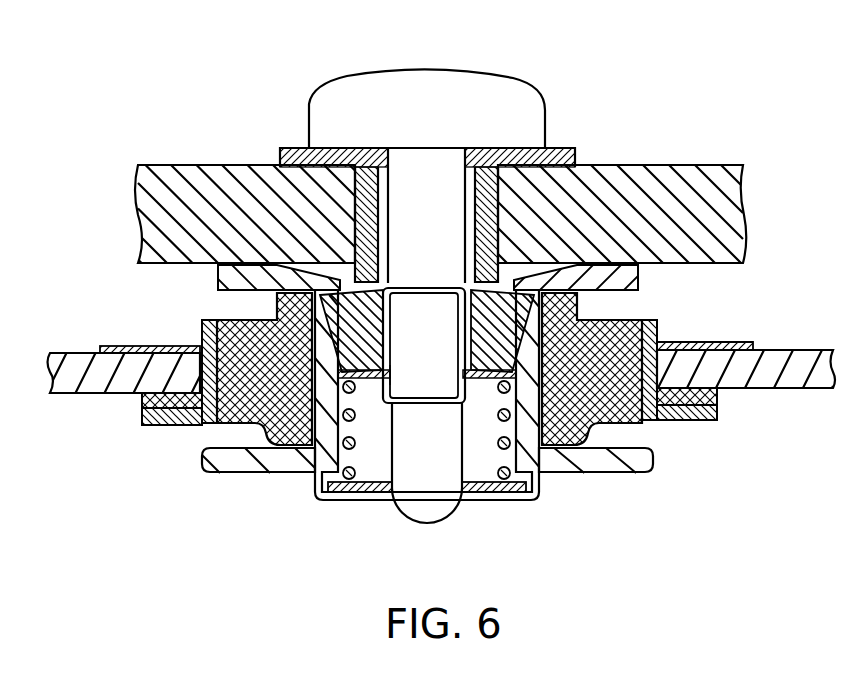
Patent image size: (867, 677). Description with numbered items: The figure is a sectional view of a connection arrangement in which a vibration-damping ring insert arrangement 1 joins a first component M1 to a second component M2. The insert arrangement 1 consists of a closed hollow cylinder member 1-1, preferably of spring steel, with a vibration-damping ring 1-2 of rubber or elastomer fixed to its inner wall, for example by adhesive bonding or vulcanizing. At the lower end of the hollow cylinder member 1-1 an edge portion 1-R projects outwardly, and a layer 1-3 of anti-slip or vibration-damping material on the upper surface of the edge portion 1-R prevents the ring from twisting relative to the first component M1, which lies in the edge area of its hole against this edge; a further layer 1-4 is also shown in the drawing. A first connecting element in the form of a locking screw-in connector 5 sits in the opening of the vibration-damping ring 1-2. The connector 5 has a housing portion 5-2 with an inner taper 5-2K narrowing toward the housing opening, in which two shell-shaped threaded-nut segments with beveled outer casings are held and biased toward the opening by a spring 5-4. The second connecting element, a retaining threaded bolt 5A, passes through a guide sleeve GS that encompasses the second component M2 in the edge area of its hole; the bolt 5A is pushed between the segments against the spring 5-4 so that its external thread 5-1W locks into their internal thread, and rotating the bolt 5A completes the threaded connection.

The vibration-damping ring insert arrangement 1 is at (235, 431).
The hollow cylinder member 1-1 is at (660, 330).
The vibration-damping ring 1-2 is at (587, 421).
The layer 1-3 is at (717, 398).
The conductor layer 1-4 is at (102, 348).
The edge portion 1-R is at (690, 421).
The locking screw-in connector 5 is at (300, 475).
The external thread 5-1W is at (465, 352).
The housing portion 5-2 is at (228, 473).
The inner taper 5-2K is at (350, 320).
The spring 5-4 is at (349, 446).
The retaining threaded bolt 5A is at (488, 88).
The guide sleeve GS is at (300, 148).
The first component M1 is at (782, 351).
The second component M2 is at (705, 166).